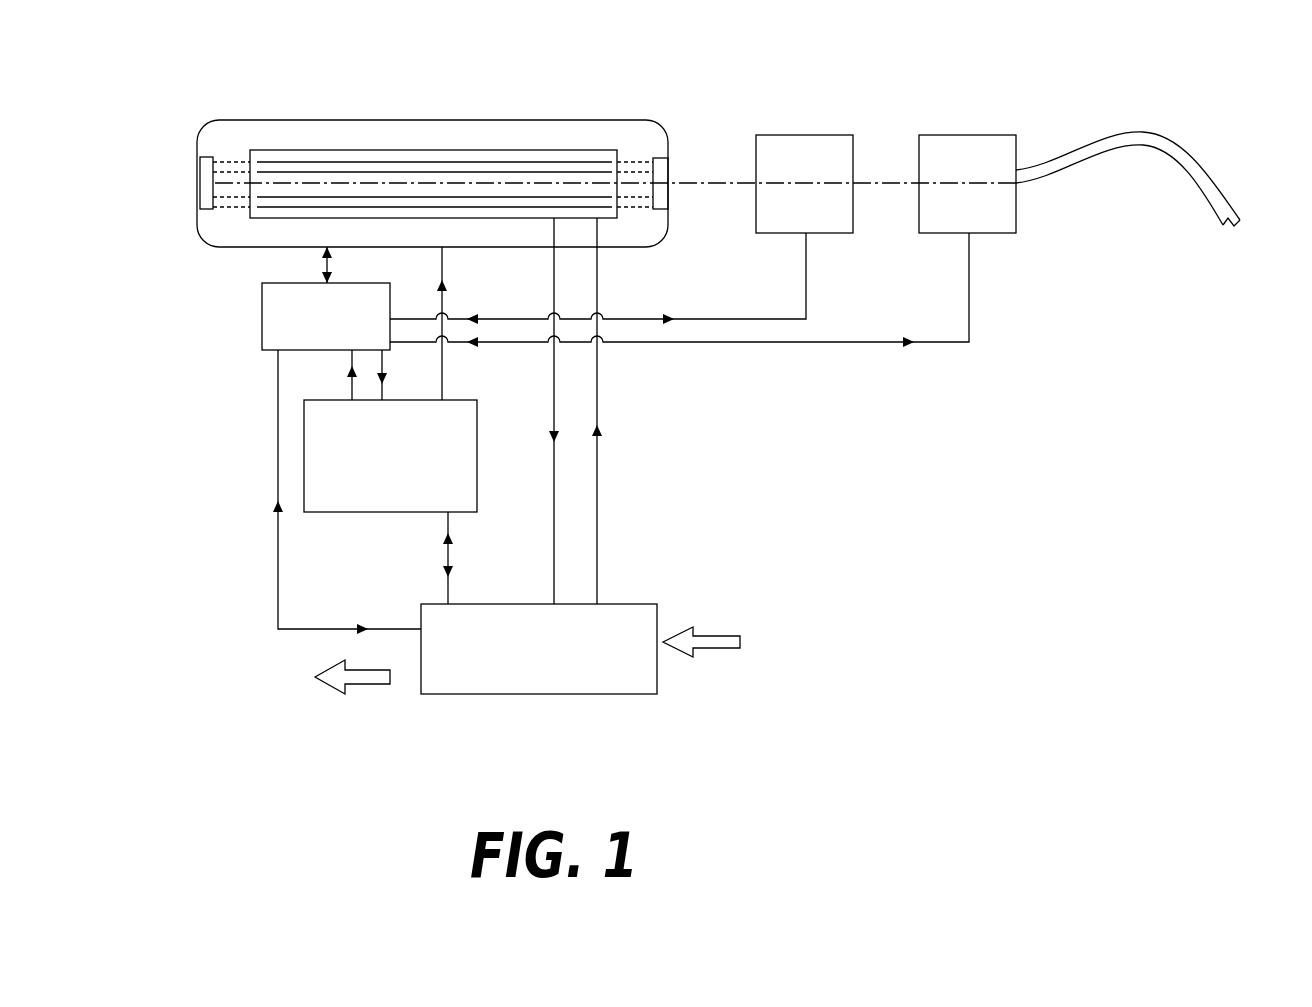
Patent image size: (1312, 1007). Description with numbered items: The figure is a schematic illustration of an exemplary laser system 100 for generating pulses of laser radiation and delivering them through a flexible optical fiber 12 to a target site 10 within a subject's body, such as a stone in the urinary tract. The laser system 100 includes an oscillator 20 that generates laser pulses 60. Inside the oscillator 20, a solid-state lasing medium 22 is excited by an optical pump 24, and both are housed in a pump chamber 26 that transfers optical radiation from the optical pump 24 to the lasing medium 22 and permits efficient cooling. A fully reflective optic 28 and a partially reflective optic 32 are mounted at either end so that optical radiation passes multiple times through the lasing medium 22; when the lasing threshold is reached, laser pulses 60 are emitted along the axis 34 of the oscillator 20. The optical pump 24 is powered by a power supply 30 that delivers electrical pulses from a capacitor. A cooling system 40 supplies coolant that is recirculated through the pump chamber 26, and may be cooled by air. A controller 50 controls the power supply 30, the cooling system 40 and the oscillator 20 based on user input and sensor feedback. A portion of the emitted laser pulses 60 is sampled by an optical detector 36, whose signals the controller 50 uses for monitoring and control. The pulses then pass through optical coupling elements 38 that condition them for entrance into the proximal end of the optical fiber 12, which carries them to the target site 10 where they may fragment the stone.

The laser system 100 is at (112, 330).
The target site 10 is at (1257, 266).
The optical fiber 12 is at (1196, 147).
The oscillator 20 is at (428, 90).
The lasing medium 22 is at (488, 176).
The optical pump 24 is at (265, 157).
The pump chamber 26 is at (580, 152).
The fully reflective optic 28 is at (199, 156).
The power supply 30 is at (396, 467).
The partially reflective optic 32 is at (662, 162).
The axis 34 is at (723, 182).
The optical detector 36 is at (816, 222).
The optical coupling elements 38 is at (979, 222).
The cooling system 40 is at (544, 659).
The controller 50 is at (337, 331).
The laser pulses 60 is at (698, 178).